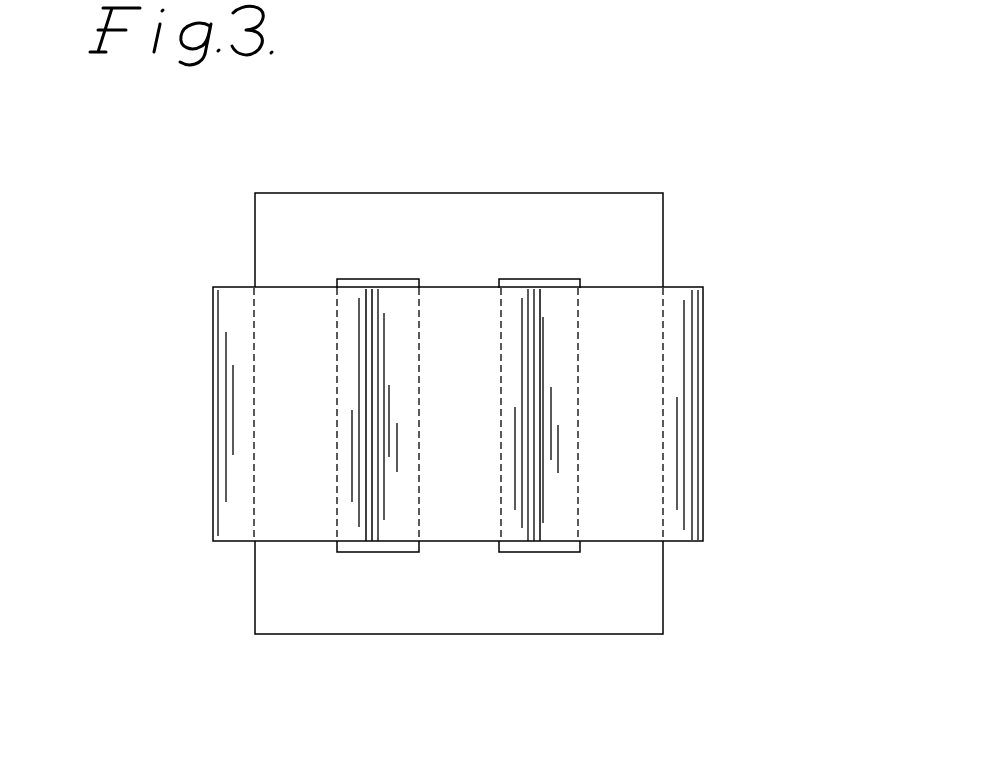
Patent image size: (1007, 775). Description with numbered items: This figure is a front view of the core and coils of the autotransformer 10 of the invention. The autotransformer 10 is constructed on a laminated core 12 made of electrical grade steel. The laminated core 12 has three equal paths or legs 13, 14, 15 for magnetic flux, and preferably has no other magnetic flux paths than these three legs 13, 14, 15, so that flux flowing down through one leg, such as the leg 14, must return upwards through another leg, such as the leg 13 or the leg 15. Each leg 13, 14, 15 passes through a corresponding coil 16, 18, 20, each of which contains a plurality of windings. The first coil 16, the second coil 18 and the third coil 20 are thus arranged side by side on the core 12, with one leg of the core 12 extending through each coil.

The autotransformer 10 is at (156, 395).
The laminated core 12 is at (540, 208).
The leg 13 is at (295, 548).
The leg 14 is at (453, 548).
The leg 15 is at (618, 553).
The first coil 16 is at (230, 310).
The second coil 18 is at (468, 310).
The third coil 20 is at (678, 343).